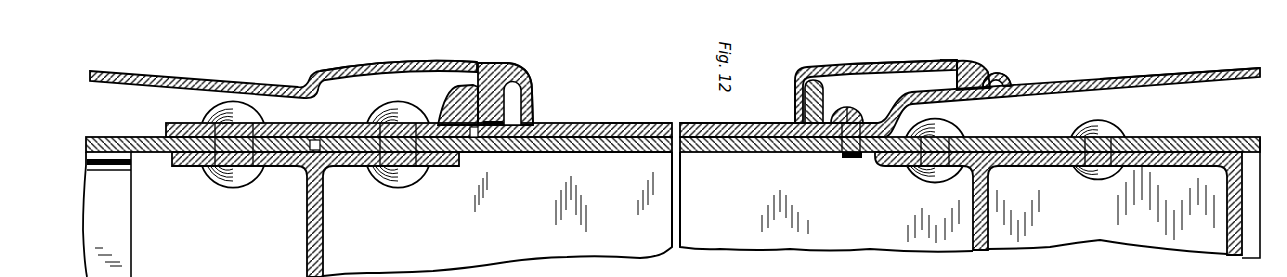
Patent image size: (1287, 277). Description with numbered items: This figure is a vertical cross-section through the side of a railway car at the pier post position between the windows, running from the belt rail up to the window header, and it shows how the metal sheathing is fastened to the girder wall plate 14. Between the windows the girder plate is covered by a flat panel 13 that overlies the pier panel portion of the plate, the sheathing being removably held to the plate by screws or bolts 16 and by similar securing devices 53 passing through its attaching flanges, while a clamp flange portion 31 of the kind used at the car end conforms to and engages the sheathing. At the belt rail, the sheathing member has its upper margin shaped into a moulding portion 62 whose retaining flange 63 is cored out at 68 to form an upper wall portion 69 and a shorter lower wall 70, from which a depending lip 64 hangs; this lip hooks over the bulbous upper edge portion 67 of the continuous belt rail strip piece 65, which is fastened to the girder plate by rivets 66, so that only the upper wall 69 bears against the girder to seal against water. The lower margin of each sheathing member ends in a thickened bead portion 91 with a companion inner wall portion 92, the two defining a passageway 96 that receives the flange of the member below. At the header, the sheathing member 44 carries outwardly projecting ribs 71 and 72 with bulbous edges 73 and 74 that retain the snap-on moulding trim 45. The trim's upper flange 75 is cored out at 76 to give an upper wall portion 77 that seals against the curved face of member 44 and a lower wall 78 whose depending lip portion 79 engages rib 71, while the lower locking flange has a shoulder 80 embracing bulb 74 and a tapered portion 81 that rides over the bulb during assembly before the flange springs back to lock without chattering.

The flat panel 13 is at (614, 123).
The girder wall plate 14 is at (149, 152).
The screw or bolt 16 is at (600, 152).
The flange portion 31 is at (125, 245).
The sheathing member 44 is at (1117, 78).
The moulding trim 45 is at (877, 66).
The screw or bolt 53 is at (851, 158).
The moulding portion 62 is at (423, 62).
The retaining flange 63 is at (515, 66).
The depending lip 64 is at (493, 147).
The belt rail strip piece 65 is at (352, 123).
The rivet 66 is at (397, 105).
The bulbous upper edge portion 67 is at (478, 70).
The cored-out portion 68 is at (527, 133).
The upper wall portion 69 is at (538, 96).
The lower wall 70 is at (508, 105).
The rib 71 is at (955, 68).
The rib 72 is at (822, 82).
The bulbous edge 73 is at (972, 65).
The bulbous edge 74 is at (801, 78).
The flange 75 is at (325, 223).
The cored-out portion 76 is at (1015, 84).
The upper wall portion 77 is at (1023, 98).
The lower wall 78 is at (983, 78).
The depending lip portion 79 is at (962, 68).
The shoulder 80 is at (795, 88).
The tapered portion 81 is at (815, 152).
The bead portion 91 is at (519, 64).
The inner wall portion 92 is at (538, 74).
The passageway 96 is at (193, 77).